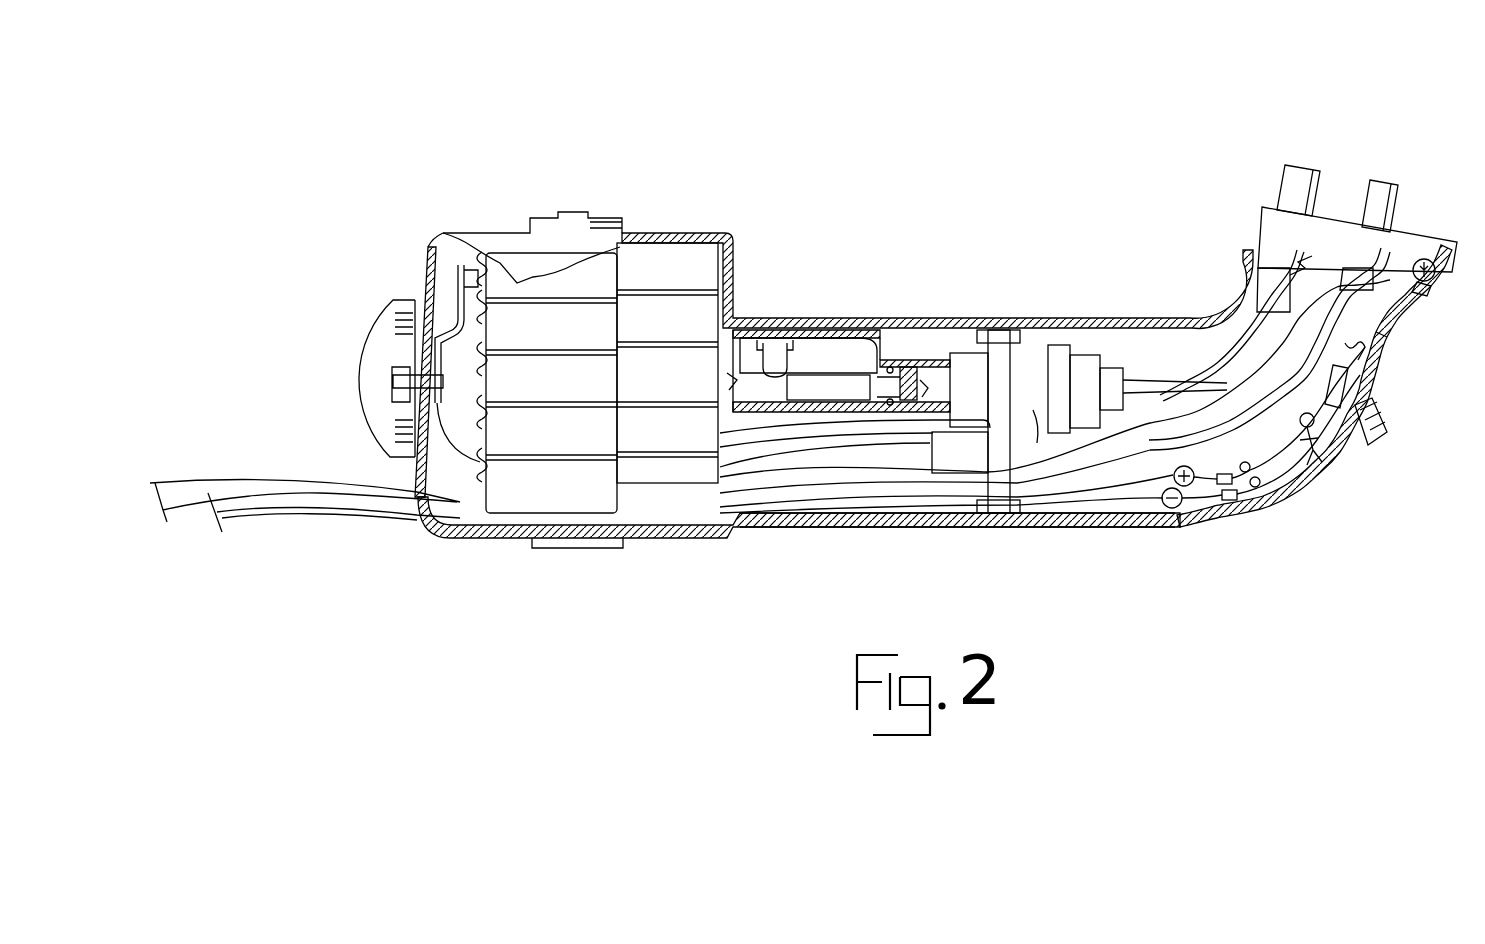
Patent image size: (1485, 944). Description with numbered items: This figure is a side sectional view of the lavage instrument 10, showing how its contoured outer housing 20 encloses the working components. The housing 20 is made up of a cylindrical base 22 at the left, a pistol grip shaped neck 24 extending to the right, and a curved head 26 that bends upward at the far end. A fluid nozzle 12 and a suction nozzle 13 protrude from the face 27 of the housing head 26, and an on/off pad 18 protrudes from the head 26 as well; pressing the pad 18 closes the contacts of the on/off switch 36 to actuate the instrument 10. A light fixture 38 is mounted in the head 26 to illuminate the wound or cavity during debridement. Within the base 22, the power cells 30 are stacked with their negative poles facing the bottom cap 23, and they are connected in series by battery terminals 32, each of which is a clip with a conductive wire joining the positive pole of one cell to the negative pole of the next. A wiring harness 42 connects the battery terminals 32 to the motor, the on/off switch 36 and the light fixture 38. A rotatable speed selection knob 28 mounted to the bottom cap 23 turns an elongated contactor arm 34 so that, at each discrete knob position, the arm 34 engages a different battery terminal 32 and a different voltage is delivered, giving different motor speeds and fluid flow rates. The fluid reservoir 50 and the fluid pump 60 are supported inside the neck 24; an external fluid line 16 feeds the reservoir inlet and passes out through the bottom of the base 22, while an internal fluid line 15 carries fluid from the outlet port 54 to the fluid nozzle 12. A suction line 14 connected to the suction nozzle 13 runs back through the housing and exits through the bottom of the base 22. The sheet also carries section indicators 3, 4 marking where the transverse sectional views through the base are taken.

The lavage instrument 10 is at (1102, 185).
The fluid nozzle 12 is at (1385, 192).
The suction nozzle 13 is at (1300, 175).
The suction line 14 is at (237, 487).
The internal fluid line 15 is at (1157, 380).
The external fluid line 16 is at (282, 522).
The on/off pad 18 is at (1360, 443).
The outer housing 20 is at (1177, 528).
The cylindrical base 22 is at (680, 540).
The bottom cap 23 is at (417, 343).
The neck 24 is at (866, 528).
The curved head 26 is at (1382, 355).
The face 27 is at (1338, 222).
The speed selection knob 28 is at (380, 417).
The power cells 30 is at (557, 319).
The battery terminals 32 is at (473, 263).
The contactor arm 34 is at (450, 320).
The on/off switch 36 is at (1328, 498).
The light fixture 38 is at (1420, 256).
The wiring harness 42 is at (1120, 445).
The fluid reservoir 50 is at (1025, 385).
The outlet port 54 is at (1107, 385).
The fluid pump 60 is at (838, 350).
The section line 3 is at (466, 192).
The section line 4 is at (322, 208).